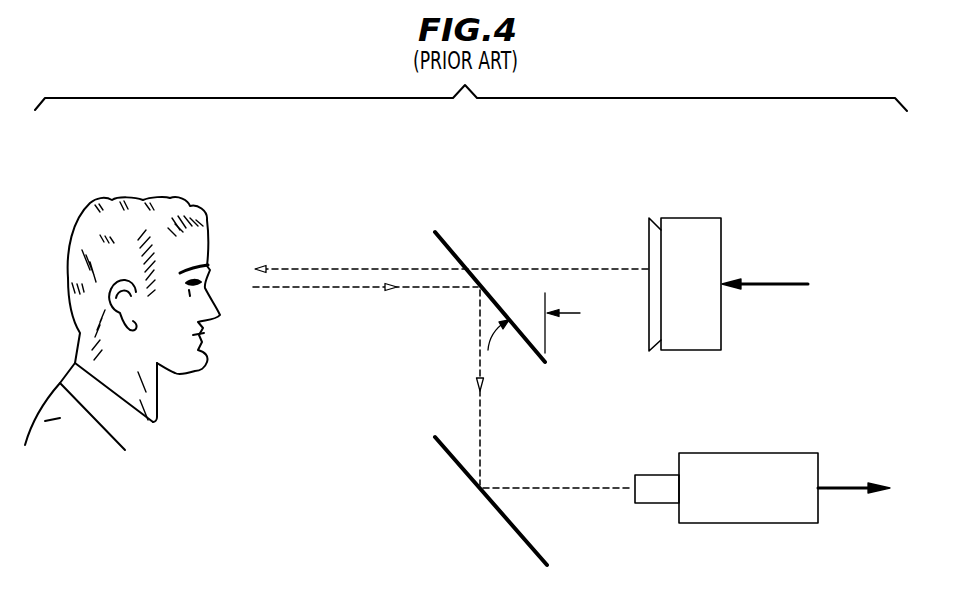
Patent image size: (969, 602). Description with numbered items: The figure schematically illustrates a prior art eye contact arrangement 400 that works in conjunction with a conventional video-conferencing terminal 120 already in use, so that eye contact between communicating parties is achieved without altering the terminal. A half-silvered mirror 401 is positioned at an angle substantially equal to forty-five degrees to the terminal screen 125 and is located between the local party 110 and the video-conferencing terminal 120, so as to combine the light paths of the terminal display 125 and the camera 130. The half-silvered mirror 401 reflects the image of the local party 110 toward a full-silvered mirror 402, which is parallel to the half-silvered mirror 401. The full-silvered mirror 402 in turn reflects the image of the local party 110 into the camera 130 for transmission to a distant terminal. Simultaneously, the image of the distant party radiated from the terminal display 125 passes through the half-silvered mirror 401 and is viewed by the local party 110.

The local party 110 is at (108, 180).
The eye contact arrangement 400 is at (315, 171).
The half-silvered mirror 401 is at (458, 252).
The full-silvered mirror 402 is at (460, 467).
The video-conferencing terminal 120 is at (695, 218).
The terminal screen 125 is at (649, 237).
The camera 130 is at (777, 453).